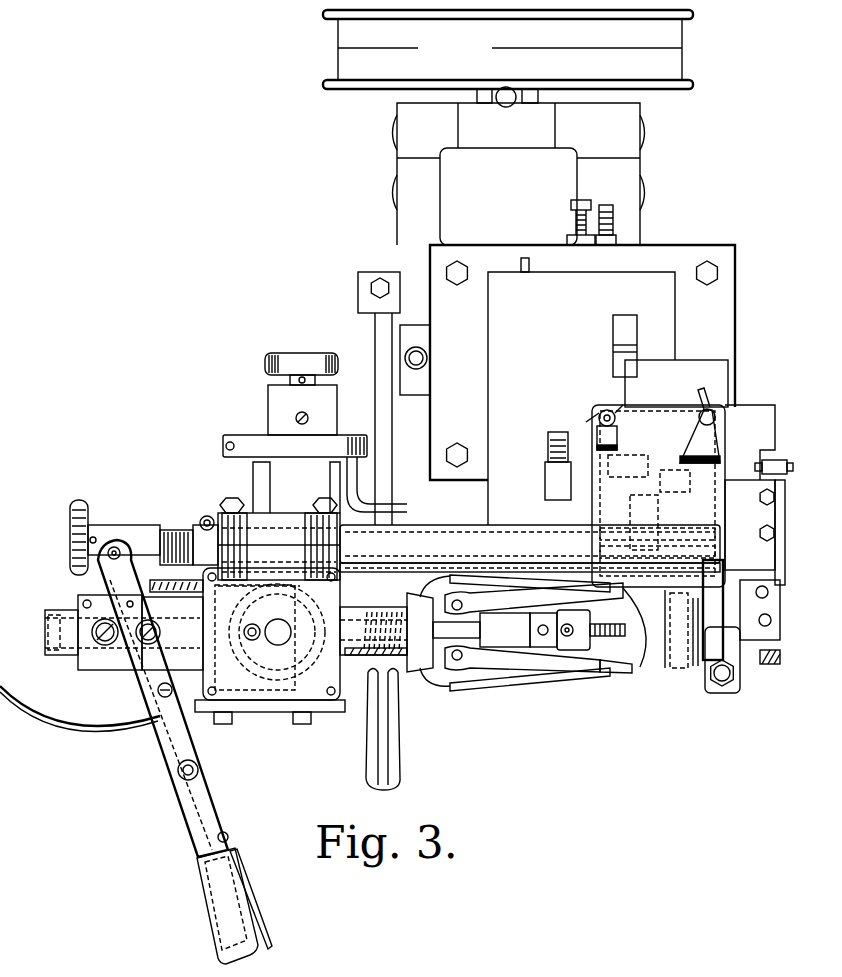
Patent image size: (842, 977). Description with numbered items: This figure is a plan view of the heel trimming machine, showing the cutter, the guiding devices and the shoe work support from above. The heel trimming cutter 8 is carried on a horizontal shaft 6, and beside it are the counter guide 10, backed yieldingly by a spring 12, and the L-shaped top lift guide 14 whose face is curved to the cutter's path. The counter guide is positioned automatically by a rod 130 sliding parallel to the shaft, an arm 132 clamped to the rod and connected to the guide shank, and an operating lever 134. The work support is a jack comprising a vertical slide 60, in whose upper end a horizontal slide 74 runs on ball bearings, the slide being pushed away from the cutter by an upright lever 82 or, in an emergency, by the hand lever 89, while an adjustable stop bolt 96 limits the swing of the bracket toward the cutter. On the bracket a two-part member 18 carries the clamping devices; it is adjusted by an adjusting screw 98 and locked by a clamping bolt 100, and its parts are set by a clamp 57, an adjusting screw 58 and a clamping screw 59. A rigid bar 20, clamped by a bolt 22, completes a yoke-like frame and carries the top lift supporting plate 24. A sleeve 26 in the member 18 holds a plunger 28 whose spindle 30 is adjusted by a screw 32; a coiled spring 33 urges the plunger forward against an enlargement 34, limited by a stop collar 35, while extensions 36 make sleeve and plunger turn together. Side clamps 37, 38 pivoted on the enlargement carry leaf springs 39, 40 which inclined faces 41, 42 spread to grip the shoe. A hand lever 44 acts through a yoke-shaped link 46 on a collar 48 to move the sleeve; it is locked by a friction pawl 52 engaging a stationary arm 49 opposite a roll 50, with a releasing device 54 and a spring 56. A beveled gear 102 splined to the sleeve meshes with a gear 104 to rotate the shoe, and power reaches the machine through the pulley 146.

The pulley 146 is at (348, 62).
The slide 60 is at (435, 255).
The slide 74 is at (650, 262).
The upright lever 82 is at (640, 355).
The rod 130 is at (660, 460).
The arm 132 is at (596, 445).
The operating lever 134 is at (781, 458).
The horizontal shaft 6 is at (705, 520).
The heel trimming cutter 8 is at (690, 553).
The adjustable stop bolt 96 is at (552, 445).
The inclined face 42 is at (437, 532).
The leaf spring 40 is at (505, 527).
The rigid bar 20 is at (450, 537).
The spring 12 is at (600, 533).
The counter guide 10 is at (600, 550).
The adjusting screw 98 is at (287, 350).
The clamping bolt 100 is at (225, 437).
The clamp 57 is at (272, 535).
The clamping screw 59 is at (200, 518).
The member 18 is at (190, 590).
The adjusting screw 58 is at (78, 527).
The collar 48 is at (85, 598).
The stop collar 35 is at (52, 640).
The yoke-shaped link 46 is at (122, 642).
The stationary arm 49 is at (92, 730).
The hand lever 44 is at (195, 845).
The roll 50 is at (150, 725).
The friction pawl 52 is at (180, 800).
The spring 56 is at (200, 925).
The releasing device 54 is at (240, 868).
The beveled gear 102 is at (240, 692).
The gear 104 is at (275, 700).
The sleeve 26 is at (360, 690).
The coiled spring 33 is at (370, 660).
The enlargement 34 is at (446, 662).
The inclined face 41 is at (420, 655).
The plunger 28 is at (500, 600).
The extension 36 is at (490, 650).
The side clamp 37 is at (625, 670).
The leaf spring 39 is at (575, 672).
The screw 32 is at (560, 645).
The spindle 30 is at (607, 636).
The side clamp 38 is at (632, 597).
The top lift guide 14 is at (688, 592).
The top lift supporting plate 24 is at (696, 600).
The bolt 22 is at (723, 675).
The hand lever 89 is at (400, 780).